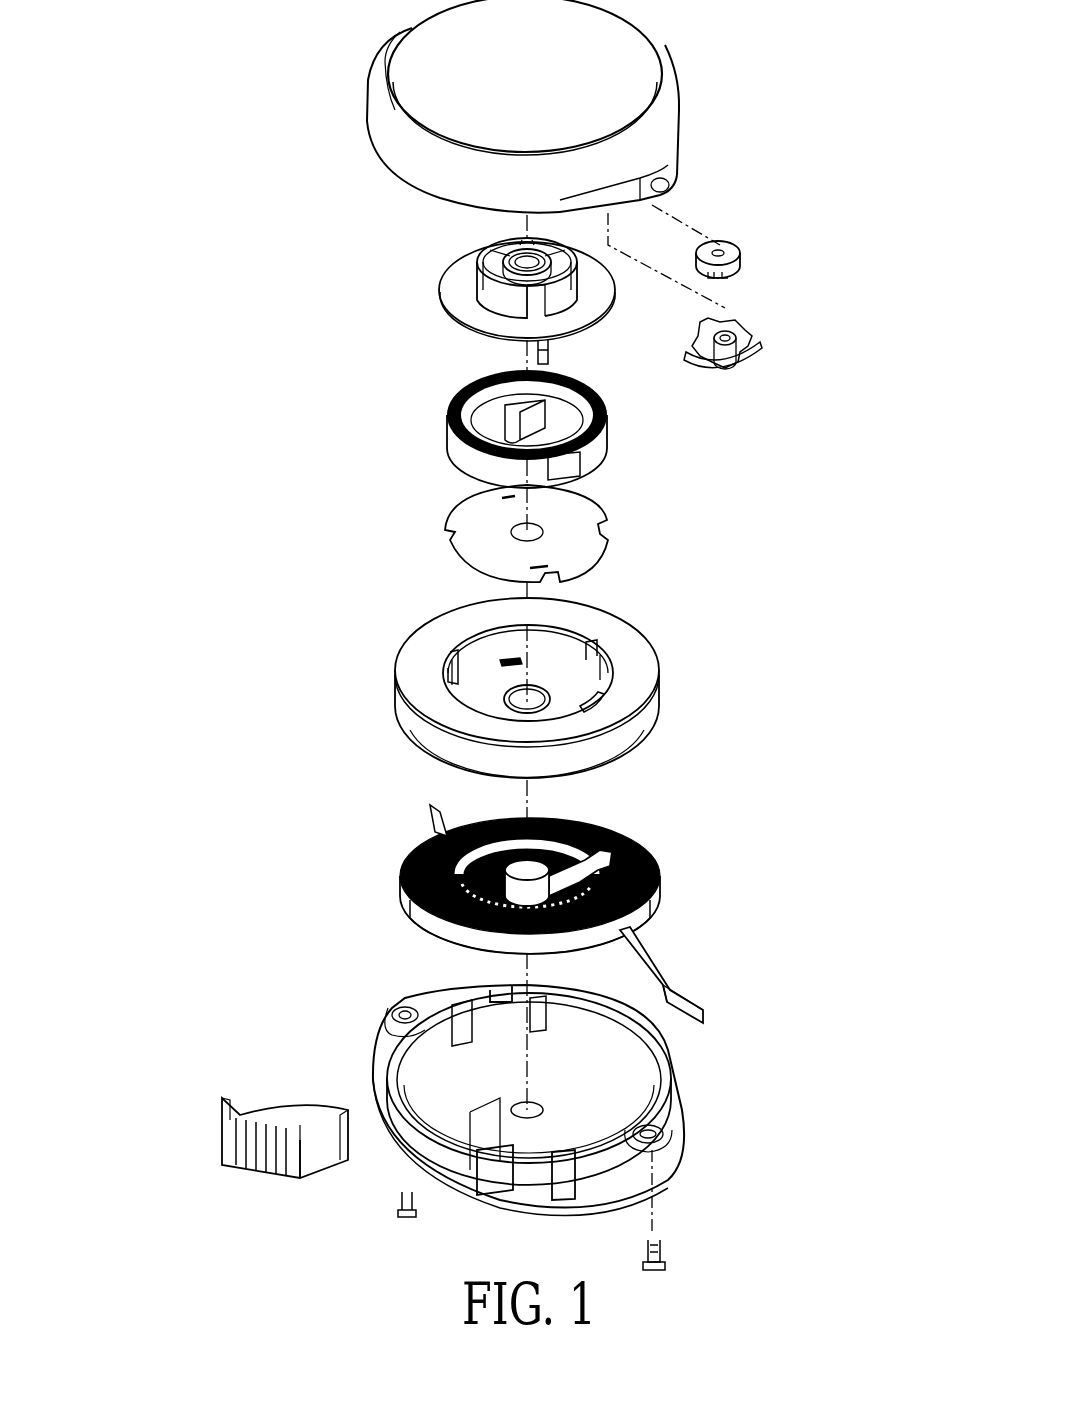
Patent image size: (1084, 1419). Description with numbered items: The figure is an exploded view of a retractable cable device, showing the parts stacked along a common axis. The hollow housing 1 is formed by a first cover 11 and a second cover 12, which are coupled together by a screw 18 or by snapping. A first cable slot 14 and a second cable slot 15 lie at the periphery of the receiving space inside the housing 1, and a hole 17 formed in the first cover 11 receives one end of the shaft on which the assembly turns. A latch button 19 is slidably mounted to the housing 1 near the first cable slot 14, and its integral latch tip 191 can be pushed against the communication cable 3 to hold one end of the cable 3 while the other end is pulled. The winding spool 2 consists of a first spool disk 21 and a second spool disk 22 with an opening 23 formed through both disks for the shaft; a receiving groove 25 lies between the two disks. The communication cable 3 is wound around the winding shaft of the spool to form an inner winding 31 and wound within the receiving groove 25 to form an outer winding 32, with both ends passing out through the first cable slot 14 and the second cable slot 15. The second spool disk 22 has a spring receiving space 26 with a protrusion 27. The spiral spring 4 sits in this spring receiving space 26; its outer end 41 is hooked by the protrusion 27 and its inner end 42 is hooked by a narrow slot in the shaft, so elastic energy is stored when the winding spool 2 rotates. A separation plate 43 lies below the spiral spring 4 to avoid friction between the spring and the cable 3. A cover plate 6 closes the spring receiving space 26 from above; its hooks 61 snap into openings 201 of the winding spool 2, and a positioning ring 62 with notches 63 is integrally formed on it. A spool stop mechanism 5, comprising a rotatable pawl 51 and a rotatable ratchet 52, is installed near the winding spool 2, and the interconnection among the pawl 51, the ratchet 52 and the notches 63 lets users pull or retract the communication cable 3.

The housing 1 is at (475, 1108).
The first cover 11 is at (680, 1085).
The first cable slot 14 is at (552, 1199).
The second cable slot 15 is at (488, 1000).
The hole 17 is at (545, 1110).
The screw 18 is at (662, 1255).
The latch button 19 is at (262, 1150).
The latch tip 191 is at (400, 1168).
The winding spool 2 is at (507, 670).
The first spool disk 21 is at (440, 760).
The second spool disk 22 is at (415, 650).
The opening 23 is at (548, 690).
The receiving groove 25 is at (612, 750).
The spring receiving space 26 is at (466, 680).
The openings 201 is at (595, 645).
The protrusion 27 is at (604, 700).
The communication cable 3 is at (524, 914).
The inner winding 31 is at (422, 826).
The outer winding 32 is at (410, 906).
The spiral spring 4 is at (514, 428).
The outer end 41 is at (582, 465).
The inner end 42 is at (520, 418).
The separation plate 43 is at (590, 538).
The spool stop mechanism 5 is at (768, 256).
The pawl 51 is at (725, 335).
The ratchet 52 is at (720, 250).
The cover plate 6 is at (511, 289).
The hooks 61 is at (550, 348).
The positioning ring 62 is at (470, 287).
The notches 63 is at (480, 245).
The second cover 12 is at (680, 100).